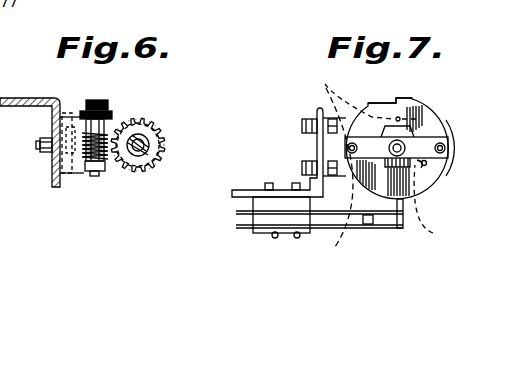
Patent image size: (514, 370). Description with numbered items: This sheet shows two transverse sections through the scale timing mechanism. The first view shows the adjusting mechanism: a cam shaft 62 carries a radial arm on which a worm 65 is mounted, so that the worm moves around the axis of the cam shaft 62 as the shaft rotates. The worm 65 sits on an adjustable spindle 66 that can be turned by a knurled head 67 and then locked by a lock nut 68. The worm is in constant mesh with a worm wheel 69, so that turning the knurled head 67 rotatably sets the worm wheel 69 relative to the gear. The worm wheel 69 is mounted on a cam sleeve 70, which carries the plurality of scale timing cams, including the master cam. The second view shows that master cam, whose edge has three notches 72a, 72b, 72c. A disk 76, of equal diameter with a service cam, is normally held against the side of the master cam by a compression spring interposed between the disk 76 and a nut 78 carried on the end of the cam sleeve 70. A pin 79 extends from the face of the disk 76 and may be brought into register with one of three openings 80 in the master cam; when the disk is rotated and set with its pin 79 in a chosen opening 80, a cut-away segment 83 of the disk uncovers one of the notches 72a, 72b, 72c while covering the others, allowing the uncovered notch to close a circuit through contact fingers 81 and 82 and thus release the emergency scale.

In FIG. 6, the cam shaft 62 is at (167, 155).
In FIG. 6, the worm 65 is at (112, 157).
In FIG. 6, the adjustable spindle 66 is at (97, 178).
In FIG. 6, the knurled head 67 is at (100, 101).
In FIG. 6, the lock nut 68 is at (113, 117).
In FIG. 6, the worm wheel 69 is at (162, 133).
In FIG. 6, the cam sleeve 70 is at (143, 137).
In FIG. 7, the notch 72a is at (383, 102).
In FIG. 7, the notch 72b is at (447, 168).
In FIG. 7, the notch 72c is at (347, 174).
In FIG. 7, the disk 76 is at (430, 120).
In FIG. 7, the nut 78 is at (428, 138).
In FIG. 7, the pin 79 is at (424, 170).
In FIG. 7, the openings 80 is at (388, 158).
In FIG. 7, the contact finger 81 is at (388, 228).
In FIG. 7, the contact finger 82 is at (327, 212).
In FIG. 7, the cut-away segment 83 is at (426, 121).